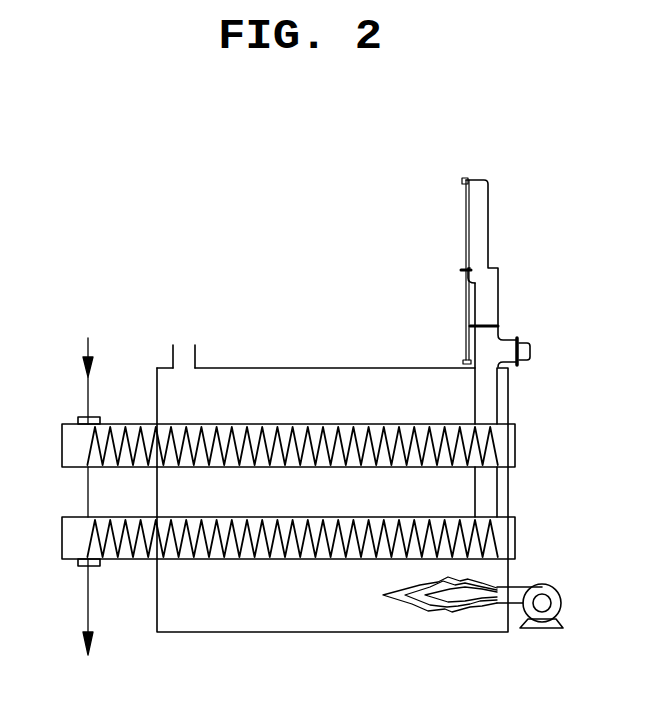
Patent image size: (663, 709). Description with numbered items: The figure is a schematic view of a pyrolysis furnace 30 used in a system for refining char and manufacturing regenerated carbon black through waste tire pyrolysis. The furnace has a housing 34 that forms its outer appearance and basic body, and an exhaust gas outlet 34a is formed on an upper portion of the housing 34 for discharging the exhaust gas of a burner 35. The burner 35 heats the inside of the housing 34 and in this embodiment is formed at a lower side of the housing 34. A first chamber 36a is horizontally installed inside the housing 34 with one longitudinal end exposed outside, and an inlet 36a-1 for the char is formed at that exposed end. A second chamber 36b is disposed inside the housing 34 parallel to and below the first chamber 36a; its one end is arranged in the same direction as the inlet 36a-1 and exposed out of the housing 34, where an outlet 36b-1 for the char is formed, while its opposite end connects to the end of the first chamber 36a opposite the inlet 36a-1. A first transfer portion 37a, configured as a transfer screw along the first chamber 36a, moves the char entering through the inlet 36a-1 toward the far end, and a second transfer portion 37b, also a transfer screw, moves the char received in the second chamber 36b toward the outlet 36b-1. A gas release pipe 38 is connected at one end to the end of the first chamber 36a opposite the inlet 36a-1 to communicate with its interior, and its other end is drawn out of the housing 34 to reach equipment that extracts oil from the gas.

The pyrolysis furnace 30 is at (313, 360).
The housing 34 is at (239, 367).
The exhaust gas outlet 34a is at (172, 352).
The burner 35 is at (538, 585).
The first chamber 36a is at (257, 423).
The inlet 36a-1 is at (82, 417).
The second chamber 36b is at (290, 560).
The outlet 36b-1 is at (80, 567).
The first transfer portion 37a is at (204, 440).
The second transfer portion 37b is at (237, 530).
The gas release pipe 38 is at (507, 339).